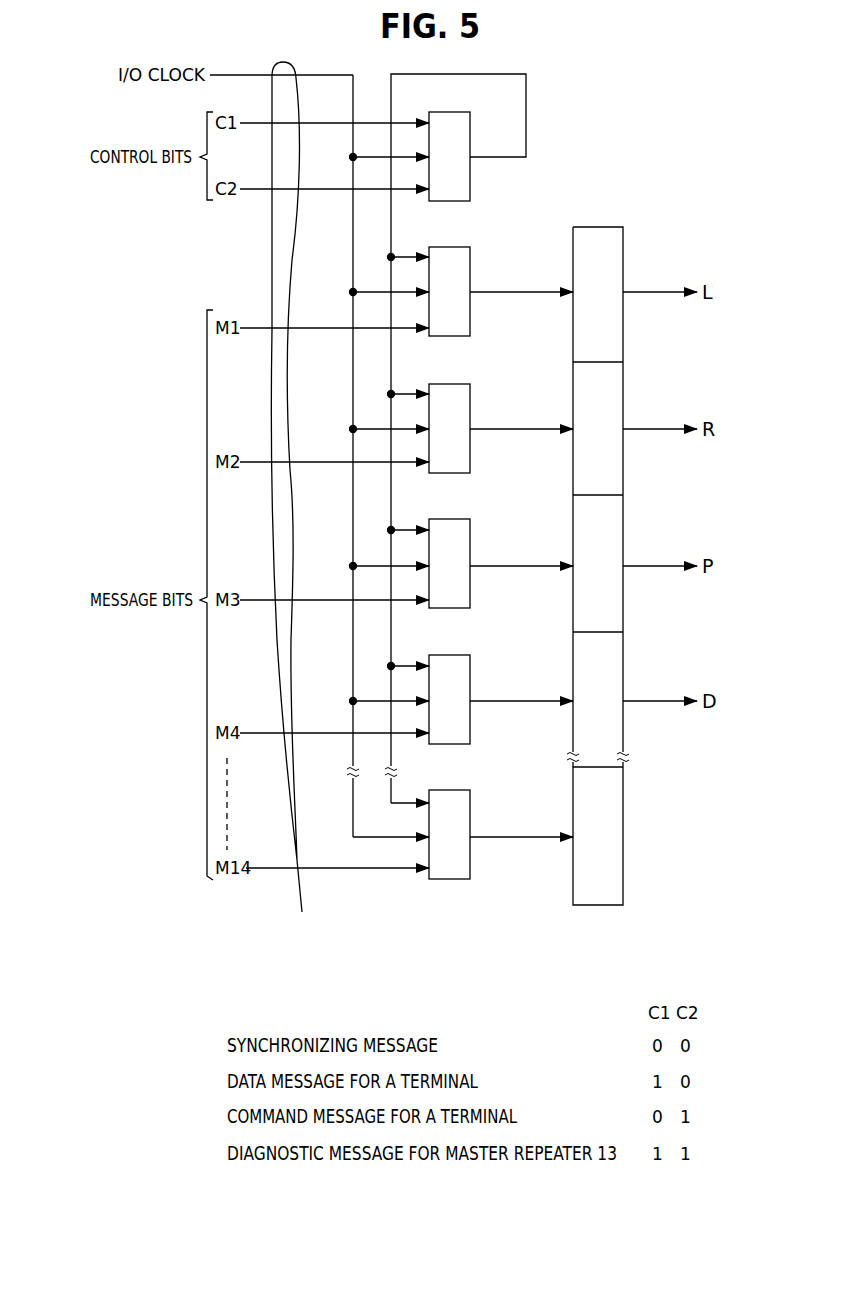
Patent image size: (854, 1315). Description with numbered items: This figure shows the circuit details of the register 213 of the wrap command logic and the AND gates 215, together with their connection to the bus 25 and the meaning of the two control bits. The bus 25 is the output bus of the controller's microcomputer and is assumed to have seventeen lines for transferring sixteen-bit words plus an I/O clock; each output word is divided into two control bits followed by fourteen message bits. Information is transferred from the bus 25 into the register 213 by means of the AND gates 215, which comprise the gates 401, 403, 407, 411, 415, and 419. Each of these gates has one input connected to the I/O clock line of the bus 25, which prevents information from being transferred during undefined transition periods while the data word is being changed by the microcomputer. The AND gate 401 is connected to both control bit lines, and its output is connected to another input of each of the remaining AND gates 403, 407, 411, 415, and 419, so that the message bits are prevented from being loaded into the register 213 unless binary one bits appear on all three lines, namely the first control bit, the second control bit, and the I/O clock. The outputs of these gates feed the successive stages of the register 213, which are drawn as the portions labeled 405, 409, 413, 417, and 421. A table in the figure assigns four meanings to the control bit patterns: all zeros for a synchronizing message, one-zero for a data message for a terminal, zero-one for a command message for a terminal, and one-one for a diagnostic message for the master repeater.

The bus 25 is at (293, 503).
The register 213 is at (628, 524).
The AND gates 215 is at (535, 193).
The AND gate 401 is at (470, 140).
The AND gate 403 is at (470, 270).
The register stage L 405 is at (623, 272).
The AND gate 407 is at (470, 405).
The register stage R 409 is at (623, 412).
The AND gate 411 is at (470, 541).
The register stage P 413 is at (623, 614).
The AND gate 415 is at (470, 670).
The register stage D 417 is at (623, 690).
The AND gate 419 is at (470, 866).
The register stage 421 is at (623, 860).